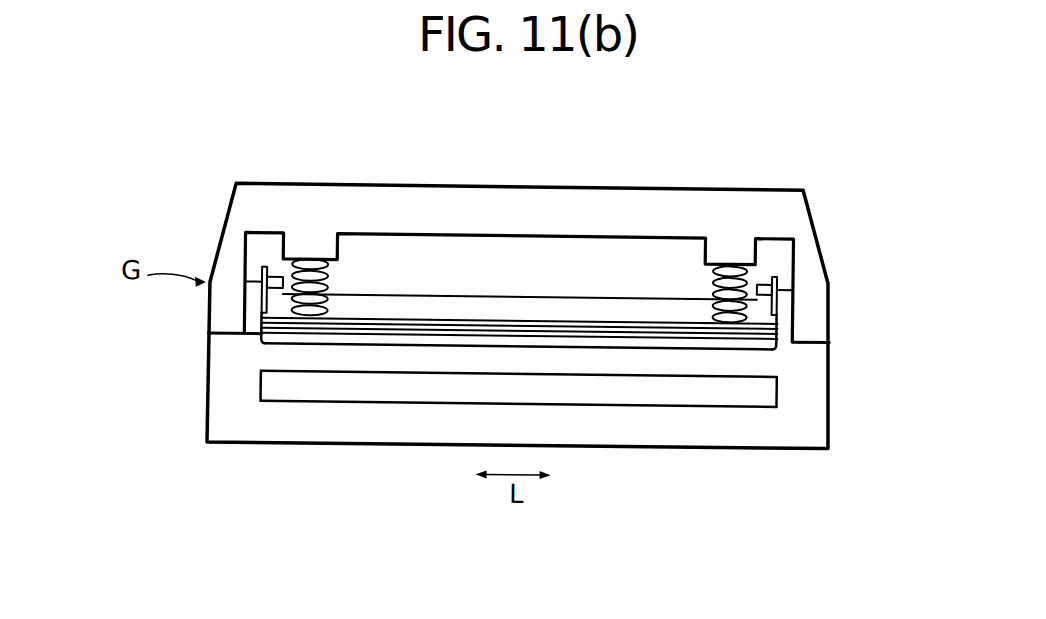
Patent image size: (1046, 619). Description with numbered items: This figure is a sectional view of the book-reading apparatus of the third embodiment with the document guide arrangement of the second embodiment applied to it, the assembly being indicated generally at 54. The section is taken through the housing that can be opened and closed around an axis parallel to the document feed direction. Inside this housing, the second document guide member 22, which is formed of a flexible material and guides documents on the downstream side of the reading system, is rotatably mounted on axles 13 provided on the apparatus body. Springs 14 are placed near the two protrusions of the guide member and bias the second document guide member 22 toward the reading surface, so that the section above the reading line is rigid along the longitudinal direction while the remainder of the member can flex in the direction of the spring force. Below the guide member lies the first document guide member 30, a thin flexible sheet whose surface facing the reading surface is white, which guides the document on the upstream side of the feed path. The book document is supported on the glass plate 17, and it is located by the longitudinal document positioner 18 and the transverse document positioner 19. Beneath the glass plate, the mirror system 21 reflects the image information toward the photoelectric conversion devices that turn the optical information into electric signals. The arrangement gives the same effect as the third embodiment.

The linear actuator unit 54 is at (605, 168).
The axles 13 is at (253, 281).
The springs 14 is at (309, 257).
The glass plate 17 is at (307, 341).
The longitudinal document positioner 18 is at (755, 332).
The transverse document positioner 19 is at (277, 332).
The mirror system 21 is at (375, 393).
The second document guide member 22 is at (640, 302).
The first document guide member 30 is at (462, 322).